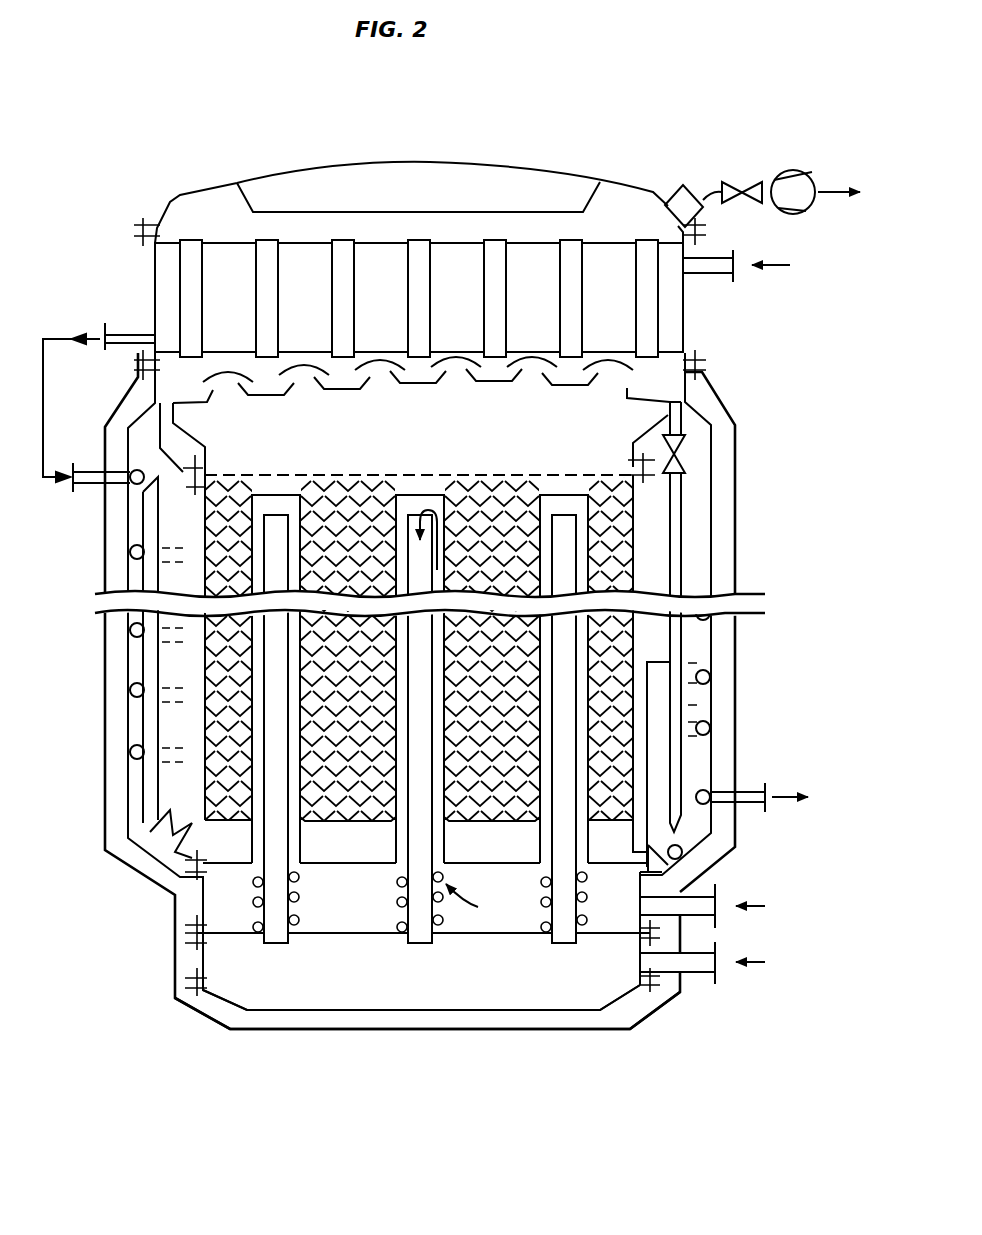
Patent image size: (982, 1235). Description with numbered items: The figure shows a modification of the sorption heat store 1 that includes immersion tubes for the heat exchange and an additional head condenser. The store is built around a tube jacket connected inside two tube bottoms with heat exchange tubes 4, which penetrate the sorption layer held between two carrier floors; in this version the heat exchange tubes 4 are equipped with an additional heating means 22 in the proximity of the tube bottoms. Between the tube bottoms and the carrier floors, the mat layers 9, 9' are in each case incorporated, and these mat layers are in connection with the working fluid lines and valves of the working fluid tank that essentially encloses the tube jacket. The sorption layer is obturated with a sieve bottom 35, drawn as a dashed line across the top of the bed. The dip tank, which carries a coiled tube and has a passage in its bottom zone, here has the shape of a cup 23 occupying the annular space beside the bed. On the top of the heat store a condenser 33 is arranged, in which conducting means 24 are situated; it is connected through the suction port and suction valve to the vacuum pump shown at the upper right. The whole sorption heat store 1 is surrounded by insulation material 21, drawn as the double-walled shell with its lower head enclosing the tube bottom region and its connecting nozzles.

The sorption heat store 1 is at (752, 422).
The heat exchange tube 4 is at (276, 932).
The mat layer 9 is at (139, 616).
The mat layer 9' is at (465, 380).
The insulation material 21 is at (400, 1022).
The additional heating means 22 is at (440, 925).
The cup 23 is at (692, 707).
The conducting means 24 is at (378, 185).
The condenser 33 is at (716, 323).
The sieve bottom 35 is at (575, 470).